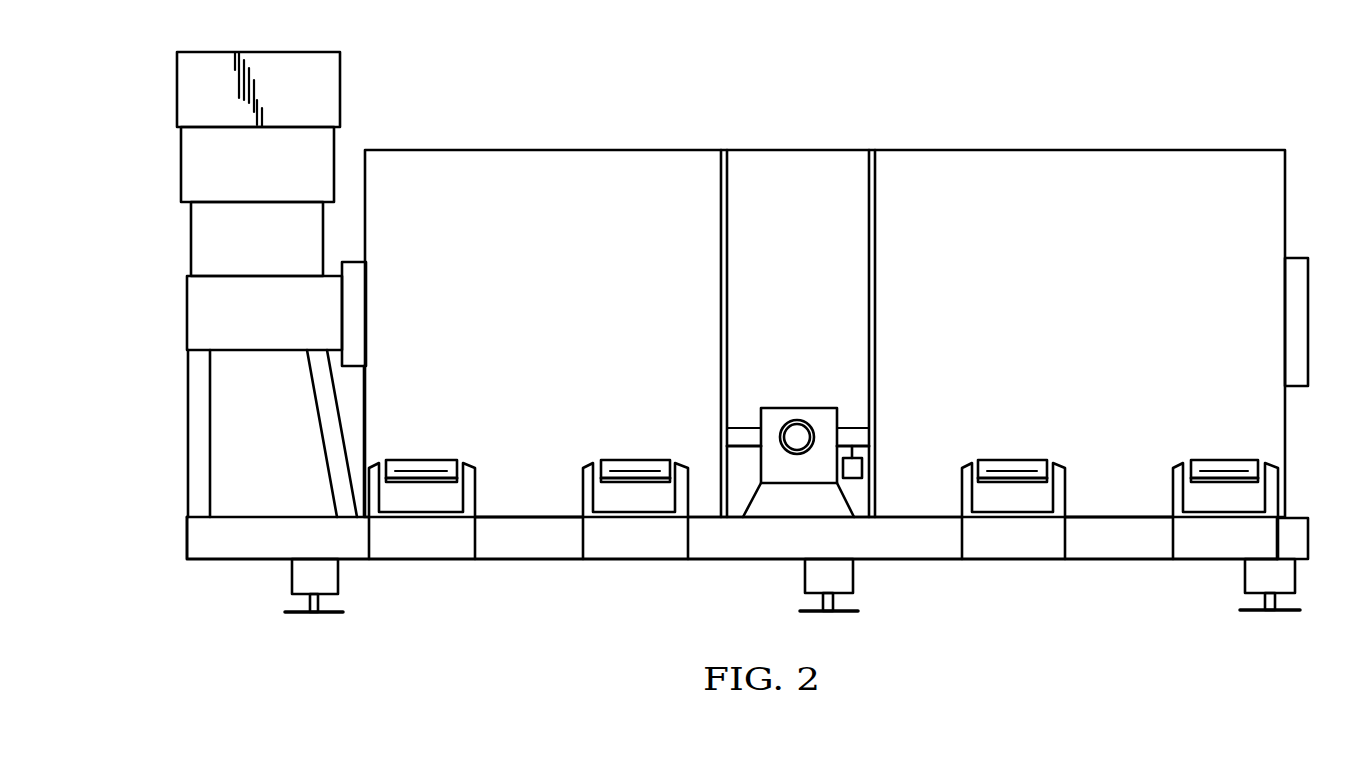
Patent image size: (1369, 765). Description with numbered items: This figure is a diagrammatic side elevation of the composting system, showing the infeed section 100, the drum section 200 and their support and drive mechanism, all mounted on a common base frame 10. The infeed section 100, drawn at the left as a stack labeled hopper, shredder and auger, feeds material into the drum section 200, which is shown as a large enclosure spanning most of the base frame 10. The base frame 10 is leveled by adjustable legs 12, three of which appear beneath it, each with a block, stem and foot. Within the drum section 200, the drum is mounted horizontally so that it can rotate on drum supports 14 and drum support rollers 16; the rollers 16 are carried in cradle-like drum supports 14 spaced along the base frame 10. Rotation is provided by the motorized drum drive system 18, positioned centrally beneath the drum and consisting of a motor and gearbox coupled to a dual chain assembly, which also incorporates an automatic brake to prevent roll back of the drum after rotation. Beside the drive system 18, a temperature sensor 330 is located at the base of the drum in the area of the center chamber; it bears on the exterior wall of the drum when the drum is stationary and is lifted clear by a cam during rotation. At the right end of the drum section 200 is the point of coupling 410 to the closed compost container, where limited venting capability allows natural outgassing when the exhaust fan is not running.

The infeed section 100 is at (163, 53).
The drum section 200 is at (1285, 125).
The base frame 10 is at (520, 559).
The adjustable legs 12 is at (339, 581).
The drum supports 14 is at (583, 472).
The drum support rollers 16 is at (412, 460).
The motorized drum drive system 18 is at (781, 408).
The temperature sensor 330 is at (862, 467).
The point of coupling 410 is at (1295, 388).